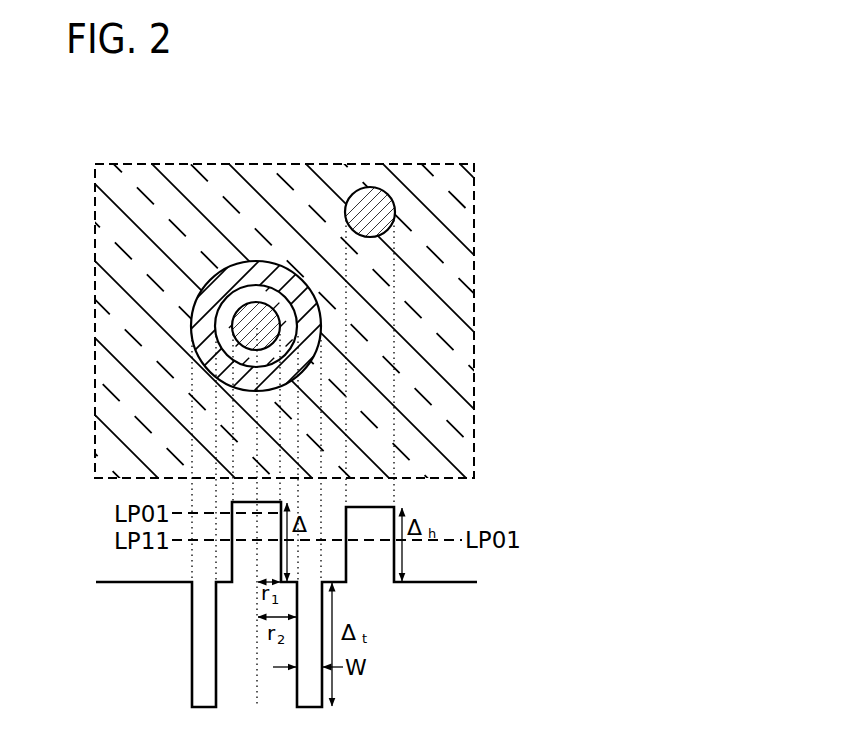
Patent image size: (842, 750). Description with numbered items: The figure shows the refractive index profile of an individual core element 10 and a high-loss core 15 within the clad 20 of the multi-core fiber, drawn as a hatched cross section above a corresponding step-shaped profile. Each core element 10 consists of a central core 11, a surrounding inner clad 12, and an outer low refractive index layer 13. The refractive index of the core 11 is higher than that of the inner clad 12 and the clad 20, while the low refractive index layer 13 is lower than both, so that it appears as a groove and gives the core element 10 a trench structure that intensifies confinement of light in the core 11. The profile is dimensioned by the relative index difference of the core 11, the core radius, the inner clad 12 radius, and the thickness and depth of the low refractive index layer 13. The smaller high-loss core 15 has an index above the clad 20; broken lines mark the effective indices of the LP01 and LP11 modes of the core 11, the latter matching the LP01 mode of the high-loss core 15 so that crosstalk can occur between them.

The core element 10 is at (220, 268).
The core 11 is at (248, 325).
The inner clad 12 is at (227, 312).
The low refractive index layer 13 is at (262, 277).
The high-loss core 15 is at (372, 200).
The clad 20 is at (443, 200).